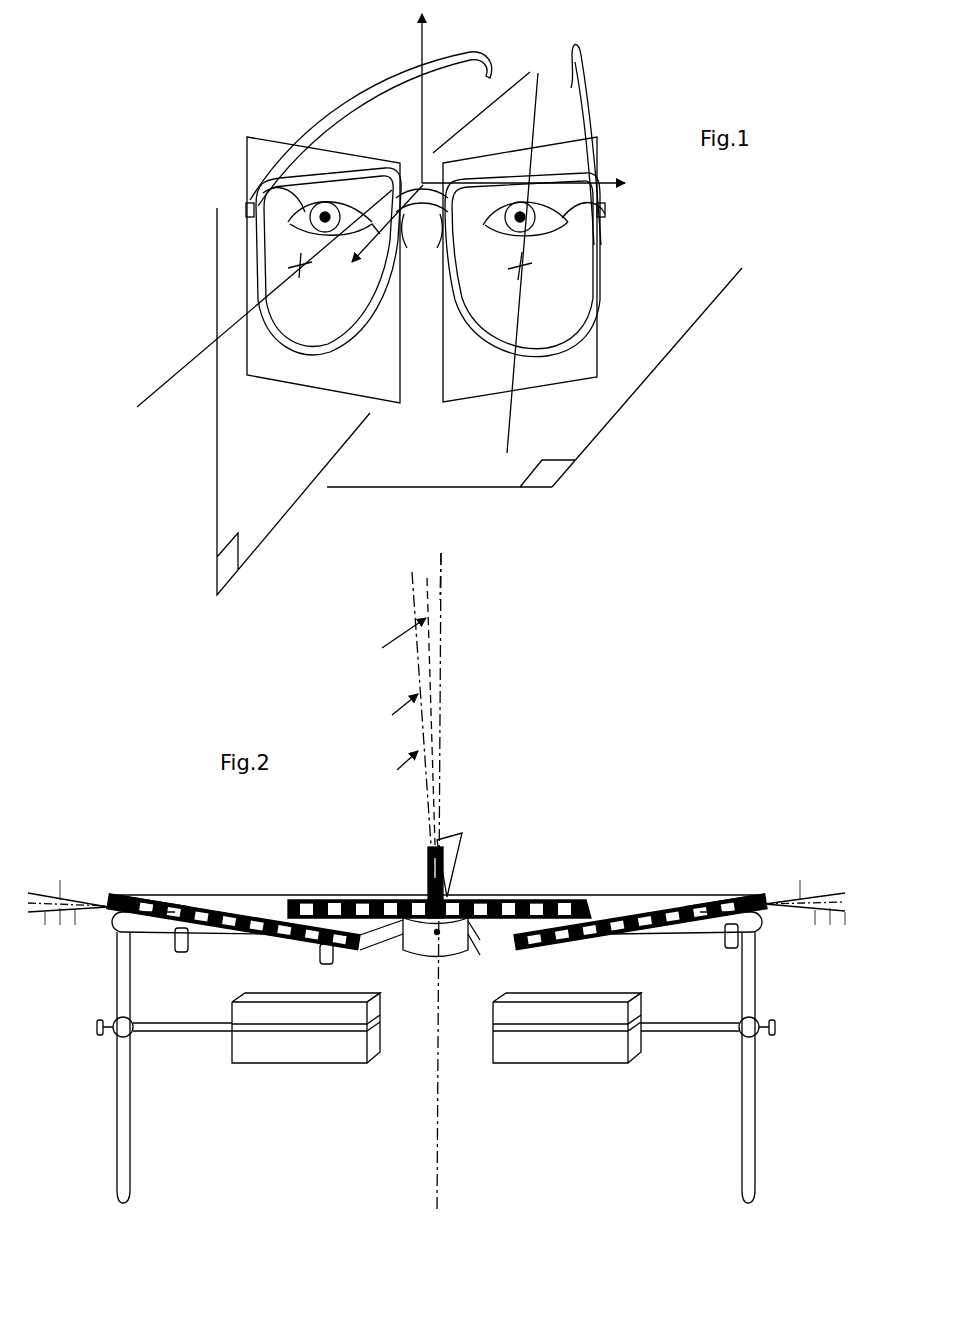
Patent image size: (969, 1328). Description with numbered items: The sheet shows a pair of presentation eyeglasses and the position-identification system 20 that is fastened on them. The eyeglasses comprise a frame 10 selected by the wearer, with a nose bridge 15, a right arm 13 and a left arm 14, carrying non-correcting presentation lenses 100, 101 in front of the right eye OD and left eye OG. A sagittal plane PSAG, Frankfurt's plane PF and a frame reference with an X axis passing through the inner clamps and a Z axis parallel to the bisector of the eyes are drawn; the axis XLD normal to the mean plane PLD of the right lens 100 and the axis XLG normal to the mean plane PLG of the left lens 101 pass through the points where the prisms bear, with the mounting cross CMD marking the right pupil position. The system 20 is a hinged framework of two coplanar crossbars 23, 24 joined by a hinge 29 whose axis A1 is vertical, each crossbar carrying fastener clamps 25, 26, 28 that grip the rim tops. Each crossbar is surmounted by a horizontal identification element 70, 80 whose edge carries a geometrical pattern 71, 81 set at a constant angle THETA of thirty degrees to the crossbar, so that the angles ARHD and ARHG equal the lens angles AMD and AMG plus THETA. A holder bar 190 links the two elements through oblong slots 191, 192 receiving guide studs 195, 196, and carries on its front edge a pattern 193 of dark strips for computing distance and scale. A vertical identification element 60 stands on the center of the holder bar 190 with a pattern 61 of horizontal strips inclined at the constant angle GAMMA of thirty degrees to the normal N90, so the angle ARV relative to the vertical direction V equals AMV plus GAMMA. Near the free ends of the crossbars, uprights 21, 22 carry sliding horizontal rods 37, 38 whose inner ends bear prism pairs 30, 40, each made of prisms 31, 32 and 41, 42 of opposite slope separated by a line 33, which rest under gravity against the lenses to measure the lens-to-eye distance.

In FIG. 1, the frame 10 is at (455, 191).
In FIG. 1, the right arm 13 is at (383, 87).
In FIG. 1, the left arm 14 is at (591, 74).
In FIG. 1, the nose bridge 15 is at (413, 218).
In FIG. 1, the presentation lens 100 is at (353, 335).
In FIG. 1, the presentation lens 101 is at (588, 334).
In FIG. 1, the right eye OD is at (258, 200).
In FIG. 1, the left eye OG is at (612, 206).
In FIG. 1, the mounting cross point CMD is at (294, 264).
In FIG. 1, the mean plane of the right presentation lens PLD is at (327, 385).
In FIG. 1, the mean plane of the left presentation lens PLG is at (593, 348).
In FIG. 1, the Frankfurt's plane PF is at (534, 377).
In FIG. 1, the sagittal plane PSAG is at (293, 401).
In FIG. 1, the axis normal to right lens plane XLD is at (170, 380).
In FIG. 1, the axis normal to left lens plane XLG is at (511, 413).
In FIG. 1, the X axis X is at (527, 105).
In FIG. 1, the Z axis Z is at (387, 237).
In FIG. 2, the position-identification system 20 is at (437, 981).
In FIG. 2, the upright 21 is at (117, 1094).
In FIG. 2, the upright 22 is at (755, 1080).
In FIG. 2, the crossbar 23 is at (227, 936).
In FIG. 2, the crossbar 24 is at (757, 922).
In FIG. 2, the fastener clamp 25 is at (179, 954).
In FIG. 2, the fastener clamp 26 is at (320, 954).
In FIG. 2, the fastener clamp 28 is at (728, 948).
In FIG. 2, the hinge 29 is at (418, 958).
In FIG. 2, the prism pair 30 is at (324, 1073).
In FIG. 2, the prism 31 is at (377, 1011).
In FIG. 2, the prism 32 is at (377, 1049).
In FIG. 2, the line of separation 33 is at (258, 1064).
In FIG. 2, the horizontal rod 37 is at (173, 1032).
In FIG. 2, the horizontal rod 38 is at (673, 1040).
In FIG. 2, the prism pair 40 is at (541, 1064).
In FIG. 2, the prism 41 is at (493, 1006).
In FIG. 2, the prism 42 is at (493, 1052).
In FIG. 2, the vertical identification element 60 is at (440, 855).
In FIG. 2, the geometrical pattern 61 is at (427, 868).
In FIG. 2, the horizontal identification element 70 is at (233, 897).
In FIG. 2, the geometrical pattern 71 is at (186, 906).
In FIG. 2, the horizontal identification element 80 is at (640, 897).
In FIG. 2, the geometrical pattern 81 is at (681, 906).
In FIG. 2, the holder bar 190 is at (592, 897).
In FIG. 2, the slot 191 is at (368, 897).
In FIG. 2, the slot 192 is at (498, 897).
In FIG. 2, the geometrical pattern 193 is at (552, 947).
In FIG. 2, the guide stud 195 is at (325, 897).
In FIG. 2, the guide stud 196 is at (540, 897).
In FIG. 2, the hinge axis A1 is at (440, 1122).
In FIG. 2, the vertical direction V is at (444, 568).
In FIG. 2, the normal N90 is at (415, 584).
In FIG. 2, the angle AMV is at (445, 603).
In FIG. 2, the angle GAMMA is at (440, 683).
In FIG. 2, the angle ARV is at (445, 736).
In FIG. 2, the angle ARHD is at (52, 890).
In FIG. 2, the angle AMD is at (74, 897).
In FIG. 2, the angle THETA is at (48, 916).
In FIG. 2, the angle ARHG is at (818, 888).
In FIG. 2, the angle AMG is at (795, 895).